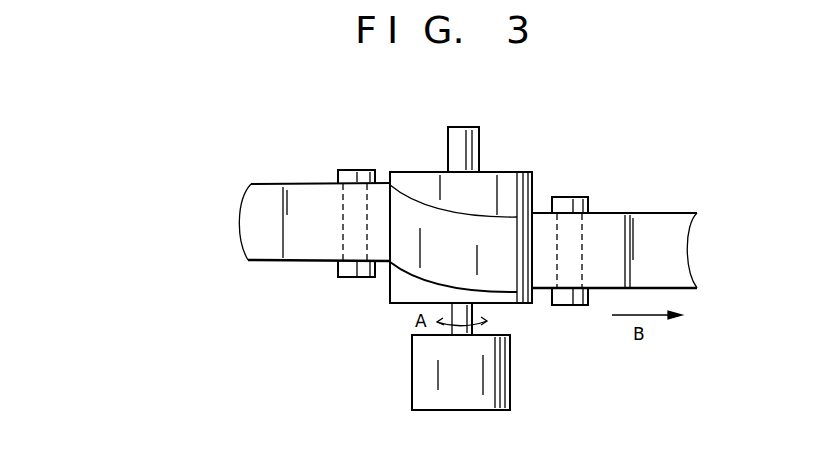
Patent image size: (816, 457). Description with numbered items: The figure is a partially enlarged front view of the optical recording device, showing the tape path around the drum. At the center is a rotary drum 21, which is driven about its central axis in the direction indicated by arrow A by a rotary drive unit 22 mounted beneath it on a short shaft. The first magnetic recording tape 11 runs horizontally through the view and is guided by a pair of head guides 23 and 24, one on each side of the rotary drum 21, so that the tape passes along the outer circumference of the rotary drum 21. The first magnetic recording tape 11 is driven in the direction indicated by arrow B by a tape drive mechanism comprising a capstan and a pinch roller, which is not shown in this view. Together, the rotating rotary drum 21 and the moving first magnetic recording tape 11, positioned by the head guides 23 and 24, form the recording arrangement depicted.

The first magnetic recording tape 11 is at (626, 214).
The rotary drum 21 is at (505, 172).
The rotary drive unit 22 is at (534, 372).
The head guide 23 is at (360, 170).
The head guide 24 is at (568, 197).